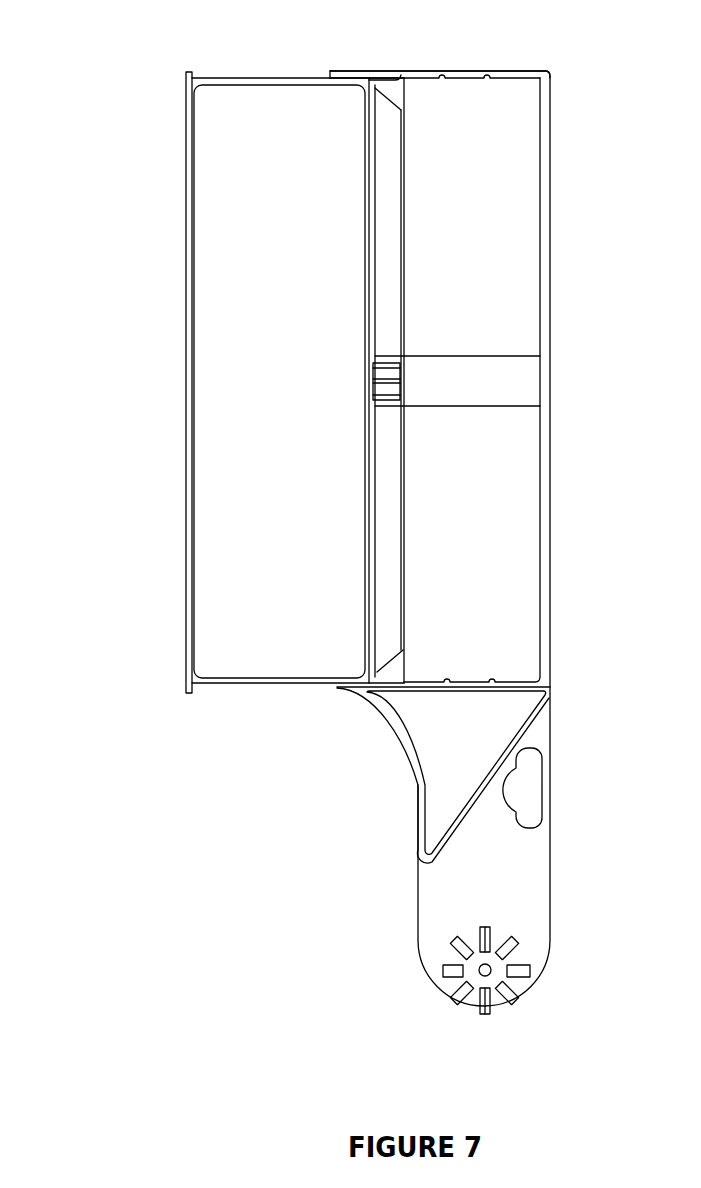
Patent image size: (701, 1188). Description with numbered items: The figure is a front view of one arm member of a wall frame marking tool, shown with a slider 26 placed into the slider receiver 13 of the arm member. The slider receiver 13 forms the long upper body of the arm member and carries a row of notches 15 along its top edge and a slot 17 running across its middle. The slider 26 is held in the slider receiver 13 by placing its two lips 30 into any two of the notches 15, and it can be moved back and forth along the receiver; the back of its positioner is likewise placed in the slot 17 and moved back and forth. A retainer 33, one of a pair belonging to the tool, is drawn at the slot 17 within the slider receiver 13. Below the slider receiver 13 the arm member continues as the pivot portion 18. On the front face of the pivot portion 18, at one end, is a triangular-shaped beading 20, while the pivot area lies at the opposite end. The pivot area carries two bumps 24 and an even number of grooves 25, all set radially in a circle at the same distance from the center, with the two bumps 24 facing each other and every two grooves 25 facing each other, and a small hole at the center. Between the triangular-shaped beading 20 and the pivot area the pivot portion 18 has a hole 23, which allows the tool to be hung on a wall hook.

The slider receiver 13 is at (548, 202).
The notches 15 is at (488, 71).
The slot 17 is at (500, 383).
The pivot portion 18 is at (553, 845).
The triangular-shaped beading 20 is at (398, 747).
The hole 23 is at (535, 783).
The bumps 24 is at (500, 1013).
The grooves 25 is at (437, 970).
The slider 26 is at (183, 530).
The lips 30 is at (397, 75).
The retainer 33 is at (378, 374).